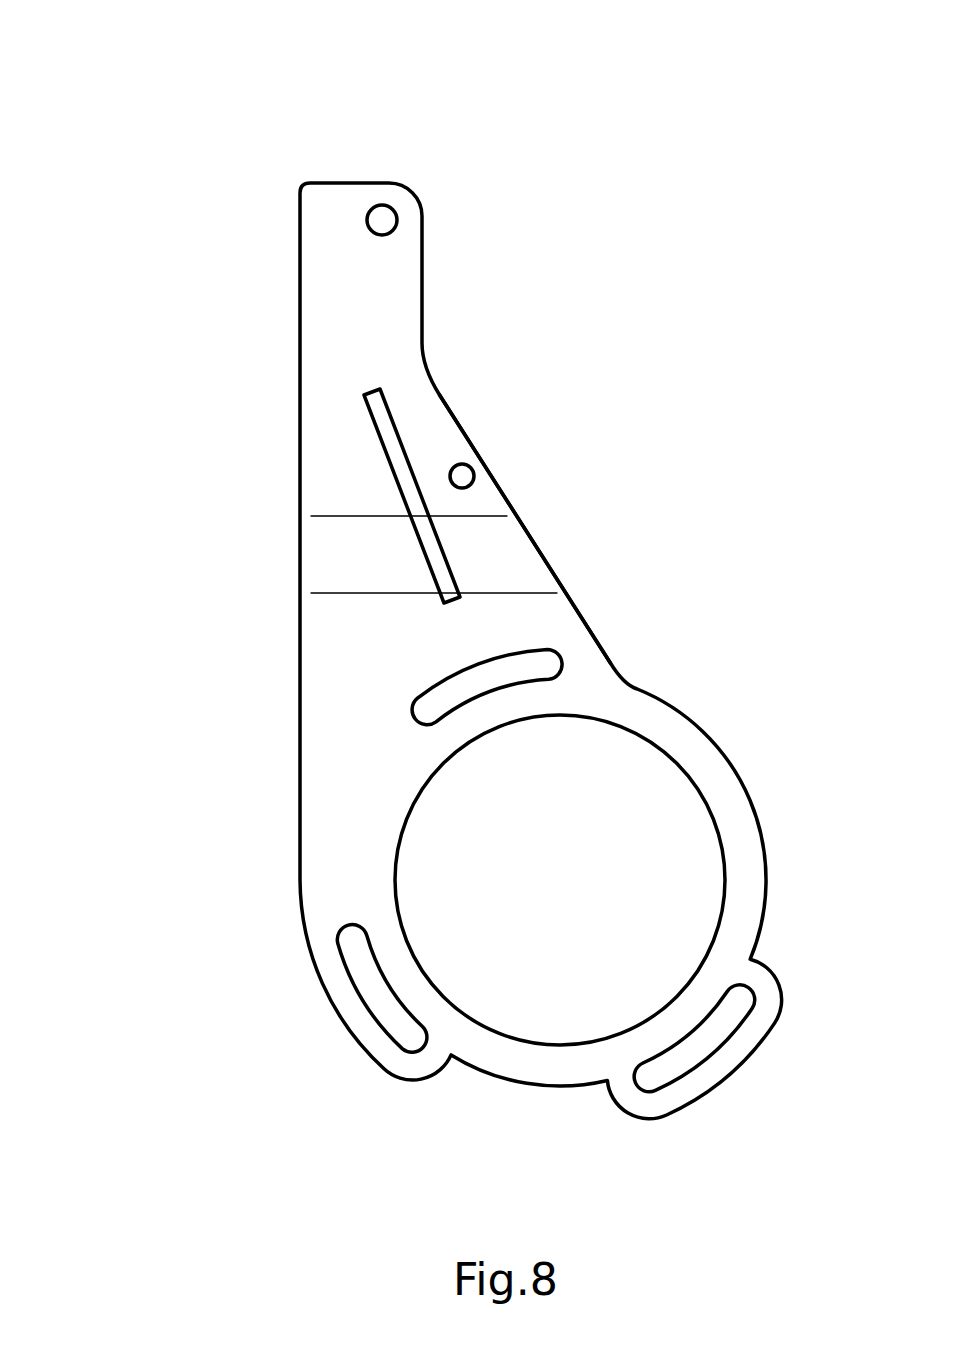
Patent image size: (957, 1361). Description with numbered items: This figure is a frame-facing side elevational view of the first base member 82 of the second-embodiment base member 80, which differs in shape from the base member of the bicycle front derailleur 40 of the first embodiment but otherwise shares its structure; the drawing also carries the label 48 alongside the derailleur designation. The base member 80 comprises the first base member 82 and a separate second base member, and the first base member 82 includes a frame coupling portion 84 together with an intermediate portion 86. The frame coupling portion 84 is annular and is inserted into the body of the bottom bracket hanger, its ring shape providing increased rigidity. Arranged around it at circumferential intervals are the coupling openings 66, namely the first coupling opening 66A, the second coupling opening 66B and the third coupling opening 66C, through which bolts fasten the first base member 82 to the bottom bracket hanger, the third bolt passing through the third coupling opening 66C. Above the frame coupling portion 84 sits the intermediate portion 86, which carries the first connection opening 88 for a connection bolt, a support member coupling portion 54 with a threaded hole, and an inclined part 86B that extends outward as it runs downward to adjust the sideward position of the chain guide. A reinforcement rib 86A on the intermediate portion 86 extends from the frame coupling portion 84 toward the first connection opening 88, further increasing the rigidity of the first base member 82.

The bicycle front derailleur 40 is at (714, 66).
The arm member 48 is at (399, 683).
The base member 80 is at (75, 511).
The first base member 82 is at (464, 807).
The frame coupling portion 84 is at (316, 806).
The intermediate portion 86 is at (314, 563).
The reinforcement rib 86A is at (398, 432).
The inclined part 86B is at (520, 546).
The first connection opening 88 is at (381, 207).
The support member coupling portion 54 is at (464, 481).
The coupling openings 66 is at (630, 1172).
The first coupling opening 66A is at (494, 694).
The second coupling opening 66B is at (410, 1053).
The third coupling opening 66C is at (656, 1073).